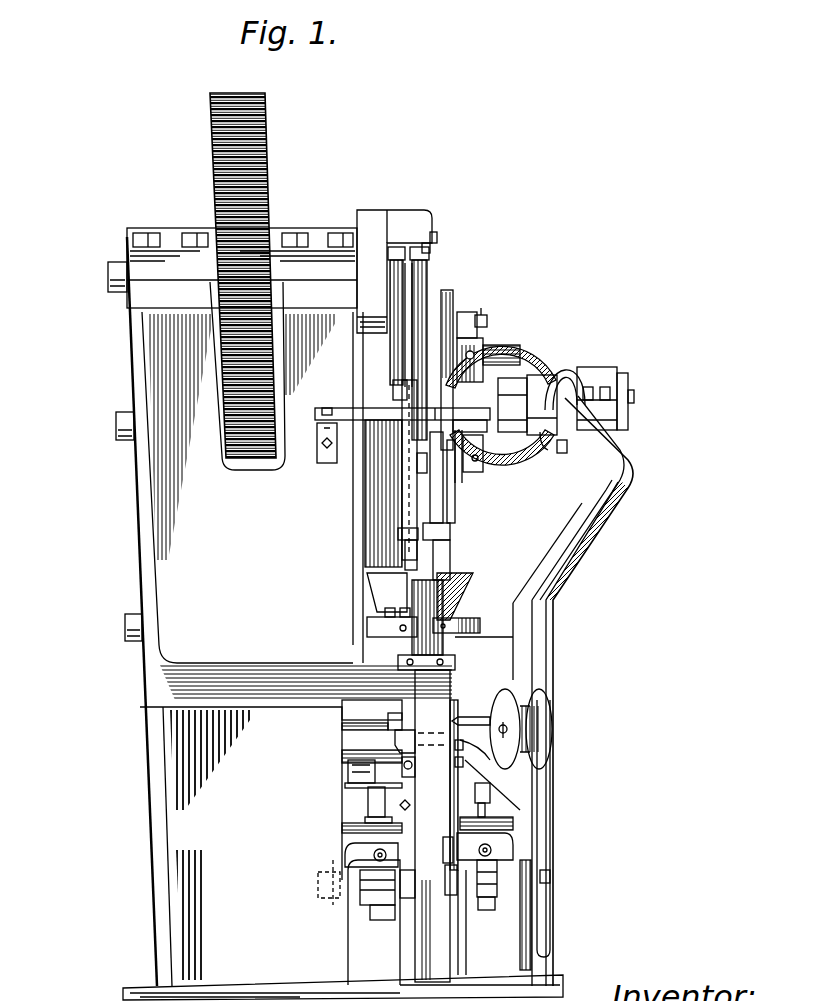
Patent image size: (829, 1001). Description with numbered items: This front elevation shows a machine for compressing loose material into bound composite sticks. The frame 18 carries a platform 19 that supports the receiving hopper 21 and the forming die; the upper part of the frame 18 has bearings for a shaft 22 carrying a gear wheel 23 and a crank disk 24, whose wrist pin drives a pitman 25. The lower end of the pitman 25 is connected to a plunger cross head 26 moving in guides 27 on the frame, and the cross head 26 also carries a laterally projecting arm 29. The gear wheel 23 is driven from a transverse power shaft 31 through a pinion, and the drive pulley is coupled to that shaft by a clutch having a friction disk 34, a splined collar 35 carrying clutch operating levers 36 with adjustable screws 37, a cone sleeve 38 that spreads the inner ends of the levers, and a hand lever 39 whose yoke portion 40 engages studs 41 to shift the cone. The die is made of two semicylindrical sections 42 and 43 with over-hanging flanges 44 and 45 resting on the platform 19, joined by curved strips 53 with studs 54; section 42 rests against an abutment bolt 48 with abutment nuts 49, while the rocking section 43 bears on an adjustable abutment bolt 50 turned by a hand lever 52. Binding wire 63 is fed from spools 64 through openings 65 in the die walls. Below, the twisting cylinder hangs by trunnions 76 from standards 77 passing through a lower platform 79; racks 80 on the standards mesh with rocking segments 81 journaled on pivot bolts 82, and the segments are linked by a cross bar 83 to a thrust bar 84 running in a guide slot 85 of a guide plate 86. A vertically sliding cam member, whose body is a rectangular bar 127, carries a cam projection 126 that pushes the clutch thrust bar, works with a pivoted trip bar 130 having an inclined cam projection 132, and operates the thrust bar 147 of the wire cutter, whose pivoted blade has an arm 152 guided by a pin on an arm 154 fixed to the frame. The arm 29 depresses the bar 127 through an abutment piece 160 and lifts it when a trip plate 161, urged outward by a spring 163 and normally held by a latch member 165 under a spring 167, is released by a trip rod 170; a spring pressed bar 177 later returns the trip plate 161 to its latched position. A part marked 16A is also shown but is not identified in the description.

The frame 18 is at (343, 614).
The platform 19 is at (462, 630).
The receiving hopper 21 is at (390, 588).
The shaft 22 is at (108, 274).
The gear wheel 23 is at (252, 168).
The crank disk 24 is at (375, 220).
The pitman 25 is at (412, 288).
The plunger cross head 26 is at (423, 490).
The guides 27 is at (447, 552).
The laterally projecting arm 29 is at (393, 457).
The transverse power shaft 31 is at (116, 429).
The friction disk 34 is at (455, 300).
The collar 35 is at (540, 385).
The clutch operating levers 36 is at (505, 352).
The adjustable screws 37 is at (487, 315).
The cone sleeve 38 is at (552, 380).
The hand lever 39 is at (575, 380).
The yoke portion 40 is at (550, 448).
The studs 41 is at (562, 453).
The die section 42 is at (403, 706).
The die section 43 is at (460, 722).
The over-hanging flange 44 is at (367, 626).
The over-hanging flange 45 is at (480, 630).
The abutment bolt 48 is at (353, 732).
The abutment nuts 49 is at (397, 732).
The adjustable abutment bolt 50 is at (523, 693).
The hand lever 52 is at (547, 930).
The curved strips 53 is at (407, 637).
The studs 54 is at (450, 622).
The binding wire 63 is at (460, 730).
The spools 64 is at (552, 718).
The openings 65 is at (457, 738).
The trunnions 76 is at (460, 768).
The standards 77 is at (368, 797).
The platform 79 is at (360, 835).
The racks 80 is at (377, 918).
The rocking segments 81 is at (373, 905).
The pivot bolts 82 is at (320, 887).
The cross bar 83 is at (497, 850).
The thrust bar 84 is at (450, 857).
The guide slot 85 is at (448, 843).
The guide plate 86 is at (428, 818).
The cam projection 126 is at (410, 895).
The rectangular bar 127 is at (410, 483).
The trip bar 130 is at (352, 784).
The inclined cam projection 132 is at (410, 805).
The thrust bar 147 is at (560, 822).
The arm 152 is at (350, 768).
The arm 154 is at (404, 770).
The abutment piece 160 is at (430, 573).
The trip plate 161 is at (410, 520).
The spring 163 is at (410, 548).
The latch member 165 is at (510, 540).
The spring 167 is at (405, 592).
The trip rod 170 is at (402, 442).
The spring pressed bar 177 is at (440, 406).
The block 16A is at (400, 534).